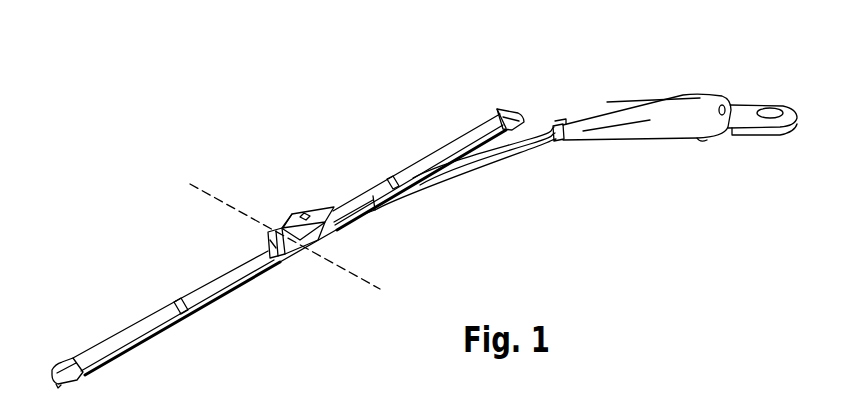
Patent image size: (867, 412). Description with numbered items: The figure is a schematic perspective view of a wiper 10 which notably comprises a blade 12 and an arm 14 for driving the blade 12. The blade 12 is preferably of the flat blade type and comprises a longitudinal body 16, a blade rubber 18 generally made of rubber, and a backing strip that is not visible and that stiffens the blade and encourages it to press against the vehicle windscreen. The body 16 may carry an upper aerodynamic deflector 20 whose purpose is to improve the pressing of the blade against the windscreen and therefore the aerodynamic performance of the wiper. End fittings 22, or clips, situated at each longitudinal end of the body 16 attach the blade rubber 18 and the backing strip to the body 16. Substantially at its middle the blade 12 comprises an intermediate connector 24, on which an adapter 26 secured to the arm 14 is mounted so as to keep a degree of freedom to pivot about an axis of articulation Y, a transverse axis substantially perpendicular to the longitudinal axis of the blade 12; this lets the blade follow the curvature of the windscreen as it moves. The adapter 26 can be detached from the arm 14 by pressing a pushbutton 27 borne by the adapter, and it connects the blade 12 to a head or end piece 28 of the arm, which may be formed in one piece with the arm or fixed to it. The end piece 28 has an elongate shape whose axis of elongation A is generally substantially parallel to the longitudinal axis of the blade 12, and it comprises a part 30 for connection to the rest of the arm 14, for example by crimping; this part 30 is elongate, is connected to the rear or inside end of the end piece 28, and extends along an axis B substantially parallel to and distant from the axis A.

The wiper 10 is at (342, 97).
The blade 12 is at (112, 326).
The arm 14 is at (539, 162).
The longitudinal body 16 is at (152, 320).
The blade rubber 18 is at (160, 334).
The upper aerodynamic deflector 20 is at (213, 283).
The end fittings 22 is at (66, 365).
The intermediate connector 24 is at (301, 257).
The adapter 26 is at (276, 256).
The pushbutton 27 is at (304, 213).
The end piece 28 is at (287, 224).
The connection part 30 is at (371, 208).
The axis of elongation A is at (356, 196).
The axis B is at (416, 186).
The axis of articulation Y is at (366, 287).